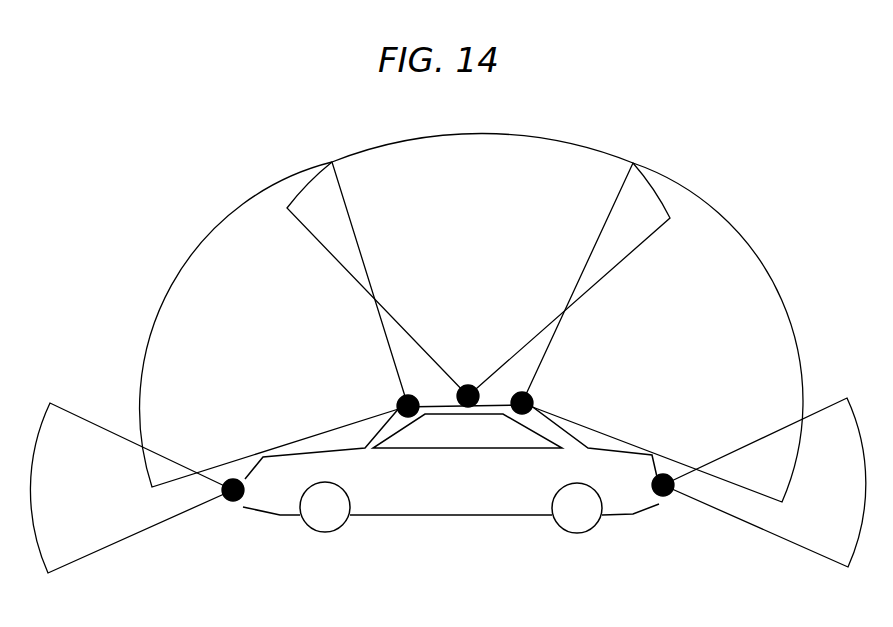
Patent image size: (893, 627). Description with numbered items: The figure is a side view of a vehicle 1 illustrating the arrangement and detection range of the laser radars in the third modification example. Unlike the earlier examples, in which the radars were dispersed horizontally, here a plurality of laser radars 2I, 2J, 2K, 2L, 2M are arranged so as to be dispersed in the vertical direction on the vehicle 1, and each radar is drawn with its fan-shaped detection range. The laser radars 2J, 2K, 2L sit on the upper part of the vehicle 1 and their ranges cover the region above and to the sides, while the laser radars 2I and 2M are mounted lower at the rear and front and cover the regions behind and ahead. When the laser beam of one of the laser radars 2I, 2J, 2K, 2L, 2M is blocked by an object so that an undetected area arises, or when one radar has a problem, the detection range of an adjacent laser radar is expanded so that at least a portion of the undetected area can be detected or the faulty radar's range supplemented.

The vehicle 1 is at (464, 516).
The laser radar 2I is at (233, 502).
The laser radar 2J is at (399, 404).
The laser radar 2K is at (469, 385).
The laser radar 2L is at (535, 401).
The laser radar 2M is at (667, 497).